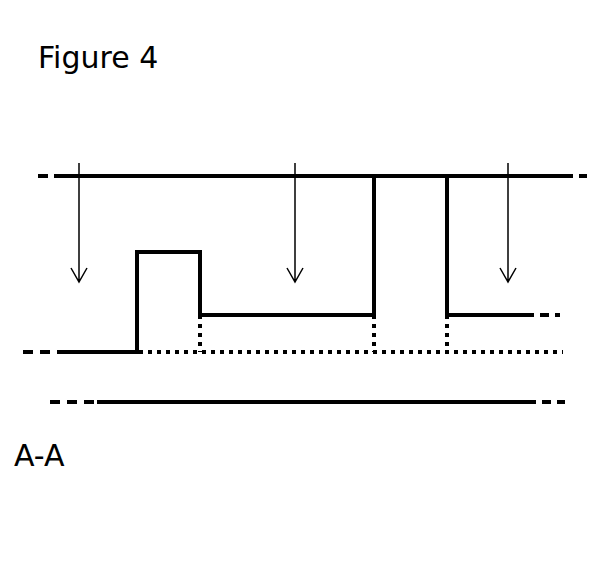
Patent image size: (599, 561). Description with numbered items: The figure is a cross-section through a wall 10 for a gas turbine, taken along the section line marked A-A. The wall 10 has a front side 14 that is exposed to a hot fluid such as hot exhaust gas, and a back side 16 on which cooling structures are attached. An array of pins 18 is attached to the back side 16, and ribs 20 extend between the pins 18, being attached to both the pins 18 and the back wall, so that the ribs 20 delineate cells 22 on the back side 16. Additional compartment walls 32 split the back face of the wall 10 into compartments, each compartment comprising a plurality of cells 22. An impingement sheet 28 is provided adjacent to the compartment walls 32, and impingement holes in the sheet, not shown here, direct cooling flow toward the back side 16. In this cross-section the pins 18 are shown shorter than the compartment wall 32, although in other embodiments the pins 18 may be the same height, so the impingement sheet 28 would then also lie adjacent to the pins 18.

The wall 10 is at (497, 122).
The front side 14 is at (274, 403).
The back side 16 is at (100, 352).
The pins 18 is at (162, 300).
The ribs 20 is at (520, 333).
The cells 22 is at (295, 205).
The impingement sheet 28 is at (267, 176).
The compartment walls 32 is at (419, 206).